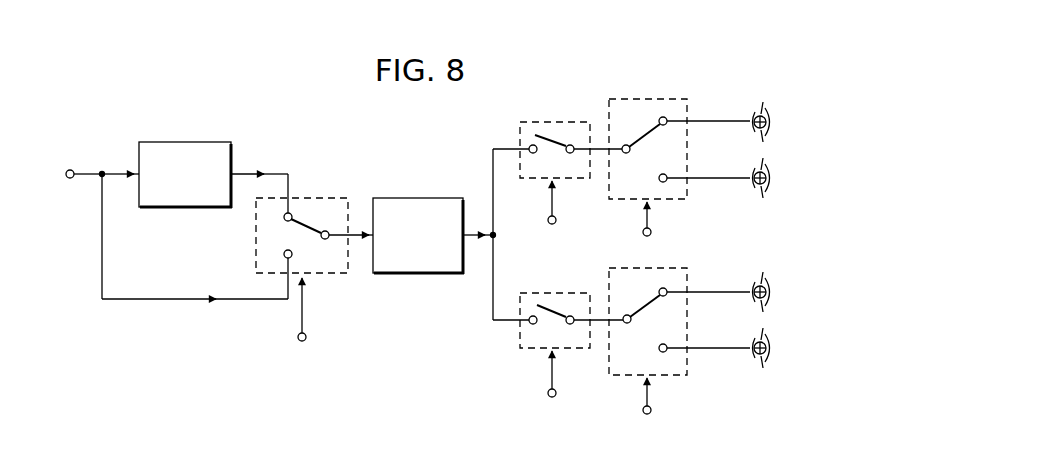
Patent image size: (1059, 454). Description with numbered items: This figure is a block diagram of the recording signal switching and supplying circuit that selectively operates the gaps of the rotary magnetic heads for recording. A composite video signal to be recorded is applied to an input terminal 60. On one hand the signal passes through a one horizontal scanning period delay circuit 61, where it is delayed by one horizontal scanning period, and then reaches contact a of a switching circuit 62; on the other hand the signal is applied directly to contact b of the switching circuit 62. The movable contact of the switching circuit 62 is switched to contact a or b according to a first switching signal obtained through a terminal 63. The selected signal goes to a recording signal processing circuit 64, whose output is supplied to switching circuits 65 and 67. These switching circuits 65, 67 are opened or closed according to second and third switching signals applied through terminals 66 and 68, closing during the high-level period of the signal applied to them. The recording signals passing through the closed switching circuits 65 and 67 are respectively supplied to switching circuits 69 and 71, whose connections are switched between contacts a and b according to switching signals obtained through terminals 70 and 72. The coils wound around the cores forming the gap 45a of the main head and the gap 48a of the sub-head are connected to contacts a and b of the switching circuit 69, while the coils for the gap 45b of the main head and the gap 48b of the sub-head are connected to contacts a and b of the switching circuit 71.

The input terminal 60 is at (71, 169).
The one horizontal scanning period (1H) delay circuit 61 is at (185, 139).
The switching circuit 62 is at (315, 197).
The terminal 63 is at (306, 340).
The recording signal processing circuit 64 is at (413, 196).
The switching circuit 65 is at (540, 120).
The terminal 66 is at (556, 223).
The switching circuit 67 is at (545, 291).
The terminal 68 is at (556, 396).
The switching circuit 69 is at (642, 97).
The terminal 70 is at (651, 233).
The switching circuit 71 is at (668, 377).
The terminal 72 is at (651, 413).
The gap of the main head 45a is at (763, 104).
The gap of the sub-head 48a is at (763, 199).
The gap of the main head 45b is at (763, 274).
The gap of the sub-head 48b is at (763, 369).